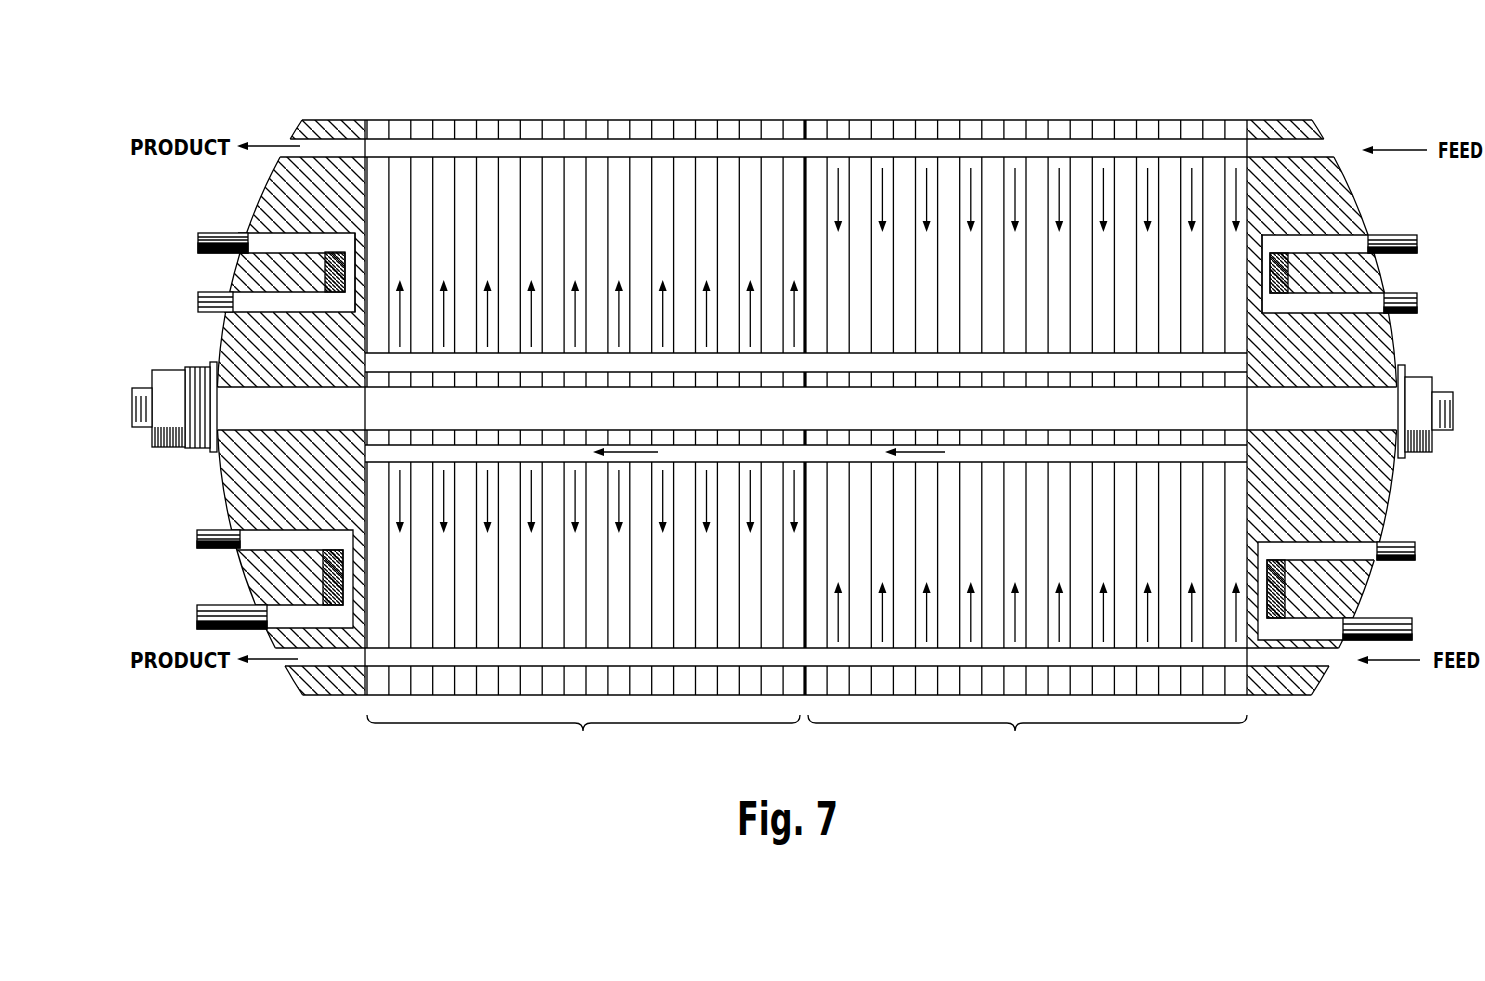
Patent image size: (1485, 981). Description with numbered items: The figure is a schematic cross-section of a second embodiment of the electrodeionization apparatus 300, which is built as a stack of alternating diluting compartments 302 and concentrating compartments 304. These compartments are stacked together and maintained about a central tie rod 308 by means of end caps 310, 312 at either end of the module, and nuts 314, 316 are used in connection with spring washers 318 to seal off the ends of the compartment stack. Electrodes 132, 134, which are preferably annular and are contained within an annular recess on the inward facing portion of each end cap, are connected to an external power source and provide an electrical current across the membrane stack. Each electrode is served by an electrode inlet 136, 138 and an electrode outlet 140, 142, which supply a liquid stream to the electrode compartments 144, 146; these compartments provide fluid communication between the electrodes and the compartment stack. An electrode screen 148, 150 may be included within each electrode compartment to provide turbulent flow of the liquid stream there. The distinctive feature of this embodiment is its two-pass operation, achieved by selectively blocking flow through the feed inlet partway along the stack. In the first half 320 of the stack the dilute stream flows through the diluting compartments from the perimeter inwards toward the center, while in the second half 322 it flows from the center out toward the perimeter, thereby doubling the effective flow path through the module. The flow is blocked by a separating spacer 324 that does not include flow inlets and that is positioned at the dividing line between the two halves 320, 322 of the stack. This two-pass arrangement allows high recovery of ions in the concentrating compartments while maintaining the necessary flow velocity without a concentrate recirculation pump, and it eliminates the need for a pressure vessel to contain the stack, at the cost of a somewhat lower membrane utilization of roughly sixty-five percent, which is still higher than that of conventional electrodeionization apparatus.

The electrodeionization apparatus 300 is at (983, 118).
The diluting compartments 302 is at (533, 167).
The concentrating compartments 304 is at (550, 167).
The central tie rod 308 is at (1330, 421).
The end cap 310 is at (240, 496).
The end cap 312 is at (1362, 513).
The nut 314 is at (170, 371).
The nut 316 is at (1407, 370).
The spring washers 318 is at (192, 367).
The first half of the stack 320 is at (1027, 745).
The second half of the stack 322 is at (583, 745).
The separating spacer 324 is at (807, 207).
The electrode 132 is at (323, 284).
The electrode 134 is at (1297, 263).
The electrode inlet 136 is at (236, 233).
The electrode inlet 138 is at (1393, 235).
The electrode outlet 140 is at (222, 293).
The electrode outlet 142 is at (1408, 293).
The electrode compartment 144 is at (347, 242).
The electrode compartment 146 is at (1263, 250).
The electrode screen 148 is at (341, 214).
The electrode screen 150 is at (1255, 314).